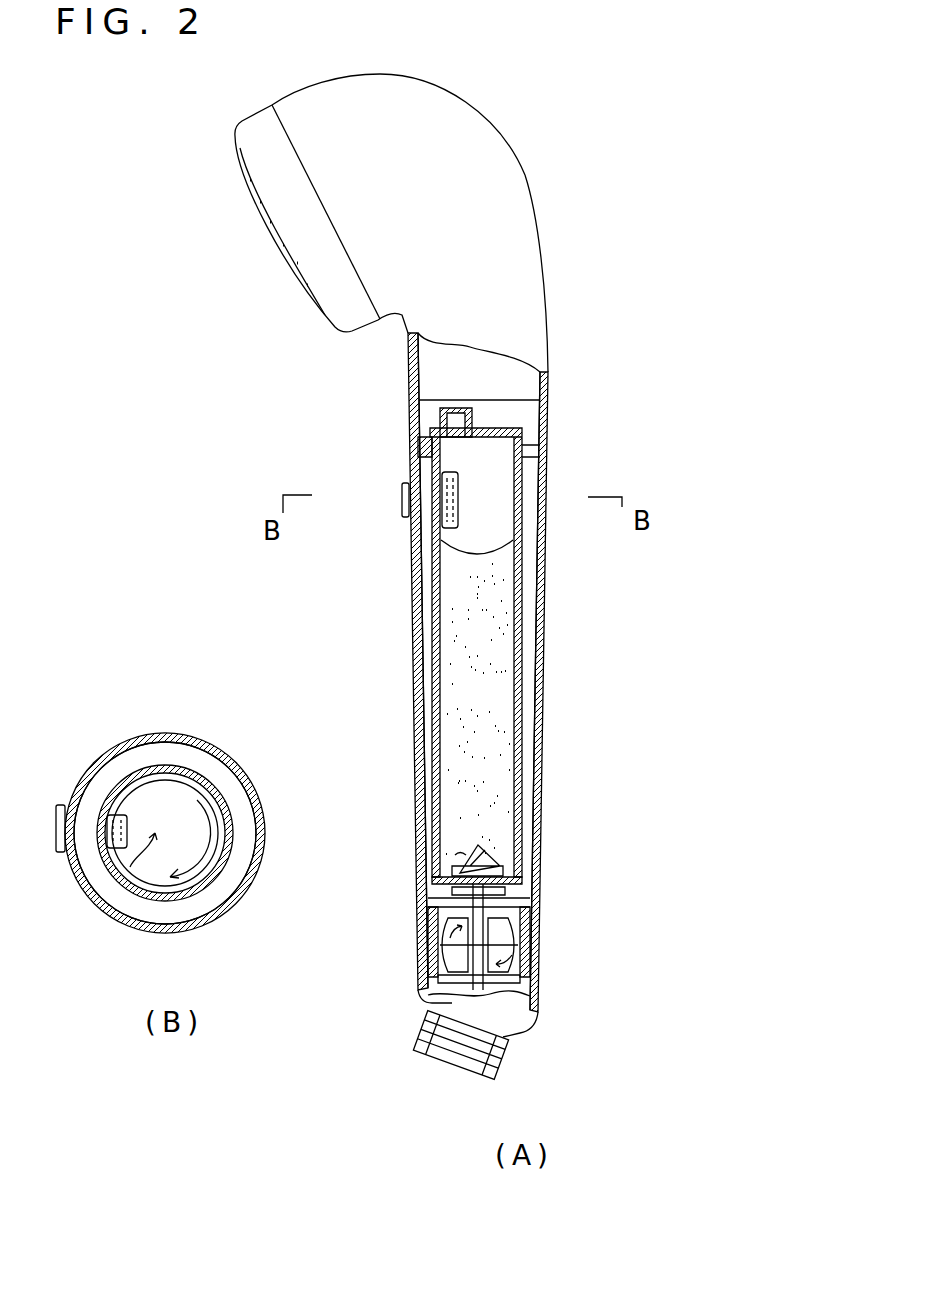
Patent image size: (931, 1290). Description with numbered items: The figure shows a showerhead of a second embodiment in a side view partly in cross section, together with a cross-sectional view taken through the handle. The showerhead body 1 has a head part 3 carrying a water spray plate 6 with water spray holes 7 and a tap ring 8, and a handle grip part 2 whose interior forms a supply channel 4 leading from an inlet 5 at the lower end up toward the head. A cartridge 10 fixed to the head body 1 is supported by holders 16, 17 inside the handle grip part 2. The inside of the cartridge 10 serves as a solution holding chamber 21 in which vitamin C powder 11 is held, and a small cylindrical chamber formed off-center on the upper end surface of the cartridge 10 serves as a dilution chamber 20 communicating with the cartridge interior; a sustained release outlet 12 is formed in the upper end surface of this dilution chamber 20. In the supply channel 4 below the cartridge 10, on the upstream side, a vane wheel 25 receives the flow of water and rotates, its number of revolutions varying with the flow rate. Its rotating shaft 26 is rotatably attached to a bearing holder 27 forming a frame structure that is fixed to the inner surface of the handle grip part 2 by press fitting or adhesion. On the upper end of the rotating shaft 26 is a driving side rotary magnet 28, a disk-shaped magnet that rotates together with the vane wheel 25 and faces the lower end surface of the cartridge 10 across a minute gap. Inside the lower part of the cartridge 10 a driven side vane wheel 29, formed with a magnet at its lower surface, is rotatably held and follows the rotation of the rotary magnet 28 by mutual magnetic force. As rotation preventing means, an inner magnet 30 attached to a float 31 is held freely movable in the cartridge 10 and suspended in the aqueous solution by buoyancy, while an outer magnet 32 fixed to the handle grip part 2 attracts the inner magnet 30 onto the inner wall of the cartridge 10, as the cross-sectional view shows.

In FIG. 2A, the showerhead body 1 is at (532, 164).
In FIG. 2A, the handle grip part 2 is at (543, 697).
In FIG. 2B, the handle grip part 2 is at (85, 773).
In FIG. 2A, the head part 3 is at (430, 89).
In FIG. 2A, the supply channel 4 is at (428, 612).
In FIG. 2B, the supply channel 4 is at (97, 886).
In FIG. 2A, the inlet 5 is at (440, 1065).
In FIG. 2A, the water spray plate 6 is at (244, 172).
In FIG. 2A, the water spray holes 7 is at (258, 208).
In FIG. 2A, the tap ring 8 is at (256, 118).
In FIG. 2A, the cartridge 10 is at (522, 622).
In FIG. 2B, the cartridge 10 is at (212, 790).
In FIG. 2A, the vitamin C powder 11 is at (490, 662).
In FIG. 2A, the sustained release outlet 12 is at (455, 405).
In FIG. 2A, the holder 16 is at (432, 850).
In FIG. 2A, the holder 17 is at (410, 437).
In FIG. 2A, the dilution chamber 20 is at (448, 422).
In FIG. 2A, the solution holding chamber 21 is at (497, 572).
In FIG. 2A, the vane wheel 25 is at (518, 938).
In FIG. 2A, the rotating shaft 26 is at (533, 903).
In FIG. 2A, the bearing holder 27 is at (520, 975).
In FIG. 2A, the rotary magnet 28 is at (510, 890).
In FIG. 2A, the vane wheel 29 is at (497, 853).
In FIG. 2A, the inner magnet 30 is at (443, 512).
In FIG. 2B, the inner magnet 30 is at (116, 815).
In FIG. 2A, the float 31 is at (452, 527).
In FIG. 2B, the float 31 is at (128, 825).
In FIG. 2A, the outer magnet 32 is at (403, 500).
In FIG. 2B, the outer magnet 32 is at (52, 832).